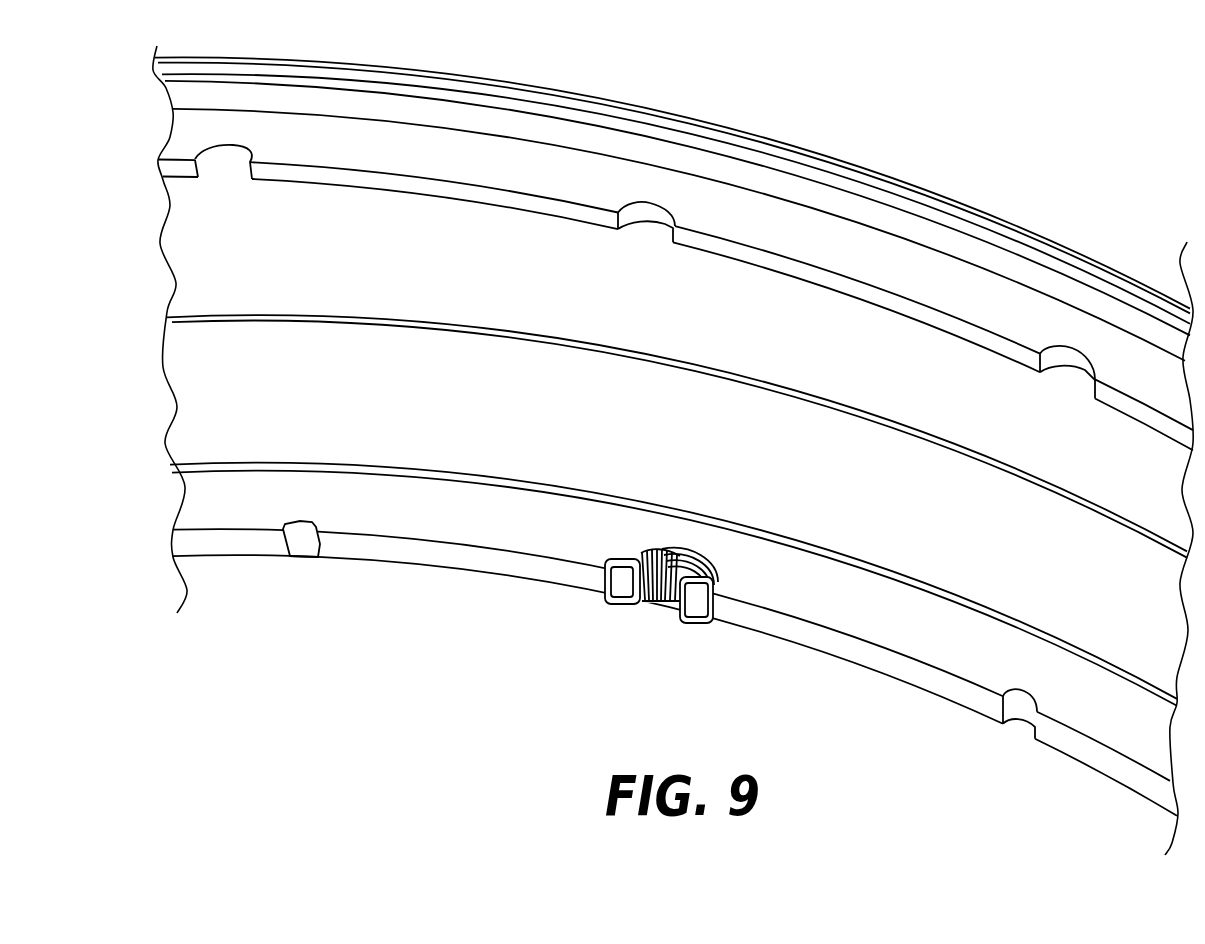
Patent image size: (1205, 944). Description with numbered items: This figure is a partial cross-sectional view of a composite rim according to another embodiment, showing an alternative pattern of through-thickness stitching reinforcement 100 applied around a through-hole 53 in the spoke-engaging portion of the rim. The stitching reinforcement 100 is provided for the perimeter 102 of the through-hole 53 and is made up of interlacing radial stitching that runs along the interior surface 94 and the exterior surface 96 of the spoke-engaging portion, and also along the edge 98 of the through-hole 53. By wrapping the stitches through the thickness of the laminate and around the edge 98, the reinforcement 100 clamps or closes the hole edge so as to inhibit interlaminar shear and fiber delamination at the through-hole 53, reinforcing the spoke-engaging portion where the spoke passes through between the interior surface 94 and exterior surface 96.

The through-hole 53 is at (307, 553).
The interior surface 94 is at (740, 590).
The exterior surface 96 is at (838, 663).
The edge 98 is at (313, 520).
The pattern of through-thickness stitching reinforcement 100 is at (656, 547).
The perimeter 102 is at (628, 550).